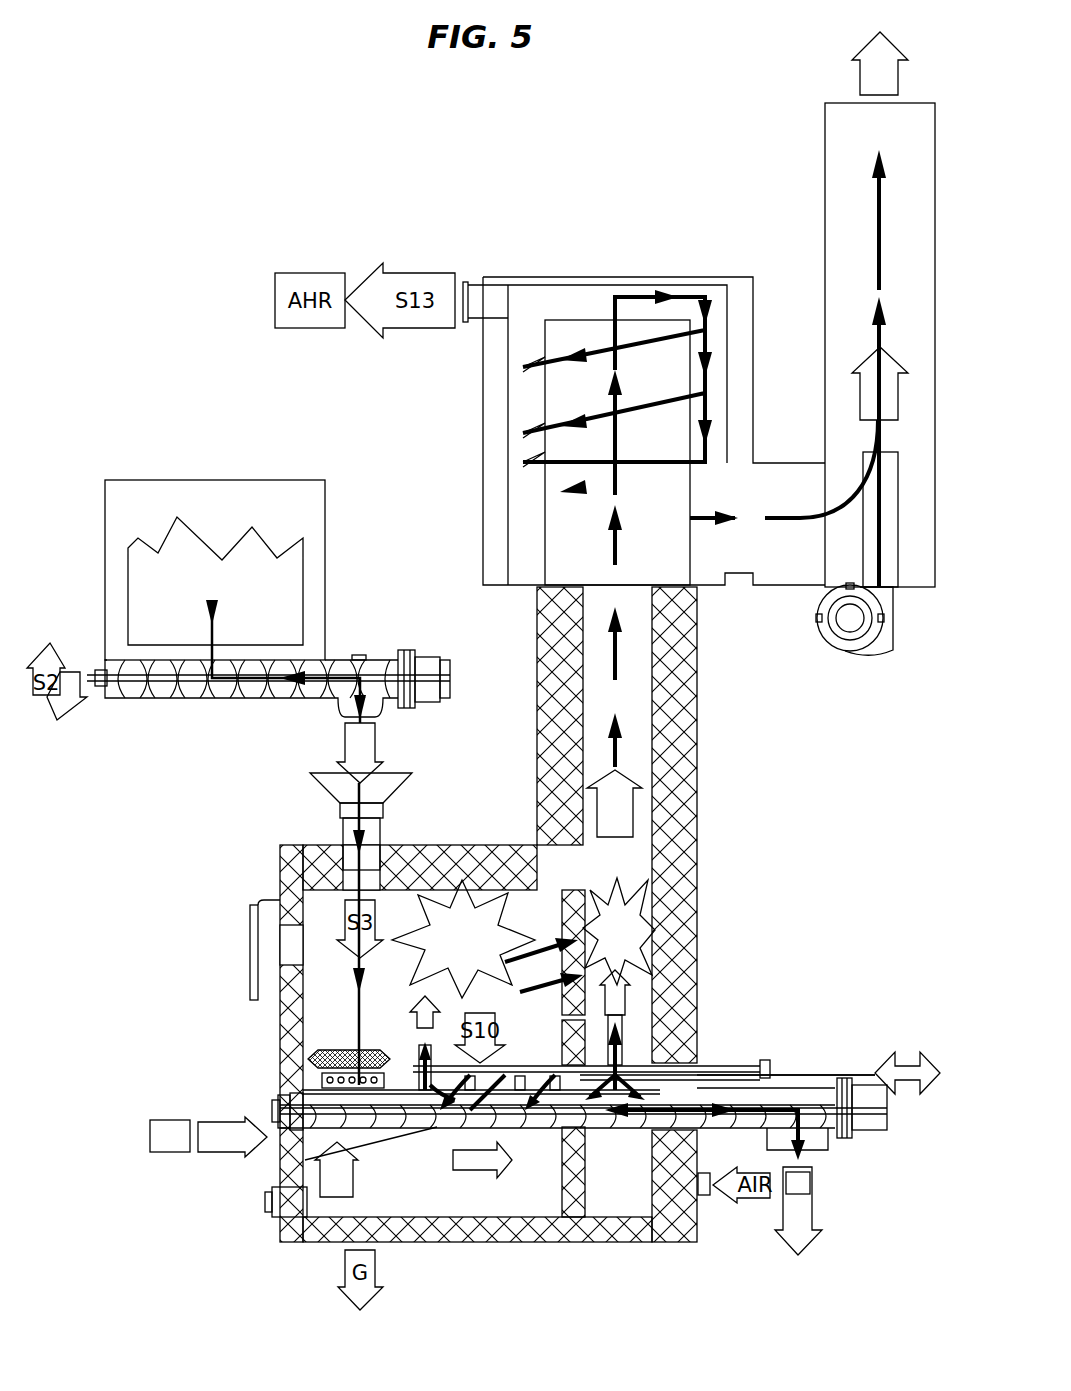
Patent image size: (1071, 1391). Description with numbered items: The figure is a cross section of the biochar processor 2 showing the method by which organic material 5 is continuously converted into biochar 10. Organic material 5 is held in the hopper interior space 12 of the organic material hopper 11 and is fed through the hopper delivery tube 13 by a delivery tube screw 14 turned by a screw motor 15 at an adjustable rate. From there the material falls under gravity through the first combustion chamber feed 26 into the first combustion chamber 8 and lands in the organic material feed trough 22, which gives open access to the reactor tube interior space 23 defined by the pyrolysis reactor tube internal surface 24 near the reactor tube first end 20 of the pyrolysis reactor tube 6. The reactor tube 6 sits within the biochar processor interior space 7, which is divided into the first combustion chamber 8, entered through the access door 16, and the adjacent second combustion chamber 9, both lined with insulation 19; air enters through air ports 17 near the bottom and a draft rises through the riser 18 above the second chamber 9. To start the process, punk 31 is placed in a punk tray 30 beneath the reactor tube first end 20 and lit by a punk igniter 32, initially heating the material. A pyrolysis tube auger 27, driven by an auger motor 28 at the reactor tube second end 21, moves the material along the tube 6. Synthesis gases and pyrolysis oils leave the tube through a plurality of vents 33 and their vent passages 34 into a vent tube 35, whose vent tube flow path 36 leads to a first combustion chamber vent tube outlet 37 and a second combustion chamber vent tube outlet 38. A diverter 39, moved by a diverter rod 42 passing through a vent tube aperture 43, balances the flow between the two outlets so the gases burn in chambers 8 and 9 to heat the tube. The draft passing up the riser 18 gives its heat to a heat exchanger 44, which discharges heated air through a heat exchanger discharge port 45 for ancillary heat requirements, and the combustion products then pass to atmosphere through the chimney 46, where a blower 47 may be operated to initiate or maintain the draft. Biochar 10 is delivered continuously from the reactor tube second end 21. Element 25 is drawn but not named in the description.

The biochar processor 2 is at (722, 872).
The organic material 5 is at (247, 620).
The pyrolysis reactor tube 6 is at (445, 1140).
The biochar processor interior space 7 is at (466, 888).
The first combustion chamber 8 is at (487, 939).
The second combustion chamber 9 is at (619, 946).
The biochar 10 is at (716, 1179).
The organic material hopper 11 is at (325, 510).
The hopper interior space 12 is at (130, 508).
The hopper delivery tube 13 is at (335, 660).
The delivery tube screw 14 is at (110, 672).
The screw motor 15 is at (425, 657).
The access door 16 is at (250, 955).
The air port 17 is at (262, 1200).
The riser 18 is at (698, 678).
The insulation 19 is at (683, 757).
The reactor tube first end 20 is at (278, 1100).
The reactor tube second end 21 is at (825, 1100).
The organic material feed trough 22 is at (325, 1050).
The reactor tube interior space 23 is at (718, 1130).
The pyrolysis reactor tube internal surface 24 is at (605, 1140).
The partition 25 is at (625, 1133).
The first combustion chamber feed 26 is at (395, 782).
The pyrolysis tube auger 27 is at (537, 1135).
The auger motor 28 is at (870, 1132).
The punk tray 30 is at (367, 1137).
The punk 31 is at (208, 1137).
The punk igniter 32 is at (278, 1148).
The vents 33 is at (445, 1075).
The vent passages 34 is at (412, 1150).
The vent tube 35 is at (617, 437).
The vent tube flow path 36 is at (548, 1068).
The first combustion chamber vent tube outlet 37 is at (415, 1048).
The second combustion chamber vent tube outlet 38 is at (620, 1026).
The diverter 39 is at (552, 1072).
The diverter rod 42 is at (808, 1072).
The vent tube aperture 43 is at (755, 1060).
The heat exchanger 44 is at (522, 277).
The heat exchanger discharge port 45 is at (465, 282).
The chimney 46 is at (880, 295).
The blower 47 is at (893, 633).